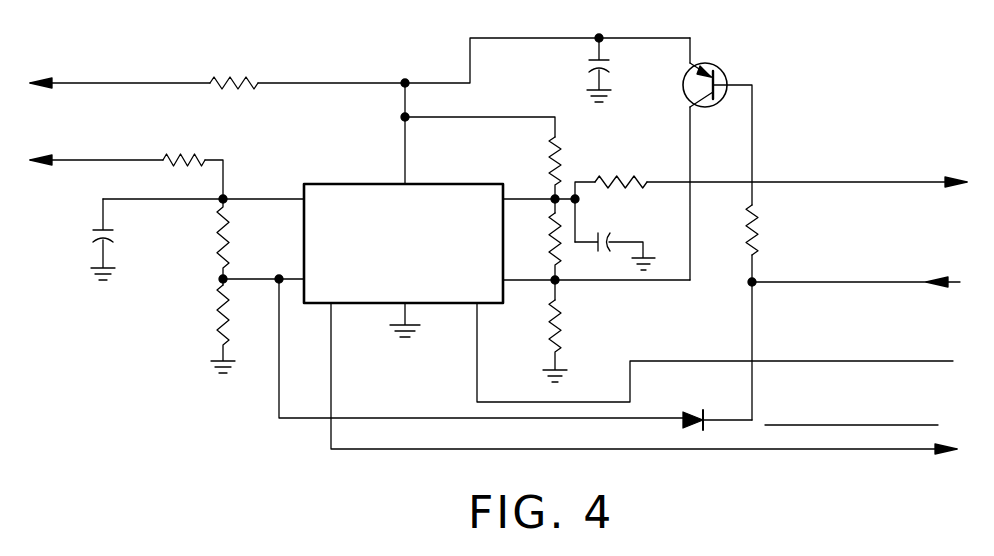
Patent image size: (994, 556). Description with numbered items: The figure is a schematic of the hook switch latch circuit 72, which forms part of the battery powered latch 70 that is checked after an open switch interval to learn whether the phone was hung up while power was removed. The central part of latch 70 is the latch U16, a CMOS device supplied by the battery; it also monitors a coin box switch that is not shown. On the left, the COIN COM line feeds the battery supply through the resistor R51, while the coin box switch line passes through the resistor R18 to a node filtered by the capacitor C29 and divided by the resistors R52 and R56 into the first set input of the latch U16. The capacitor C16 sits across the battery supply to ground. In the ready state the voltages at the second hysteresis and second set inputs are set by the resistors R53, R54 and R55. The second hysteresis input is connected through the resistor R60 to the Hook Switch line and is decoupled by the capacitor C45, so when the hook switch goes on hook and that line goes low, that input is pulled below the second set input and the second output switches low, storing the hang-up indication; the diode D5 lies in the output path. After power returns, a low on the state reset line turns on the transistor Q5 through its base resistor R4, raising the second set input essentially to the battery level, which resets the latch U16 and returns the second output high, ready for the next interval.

The battery powered latch 70 is at (498, 229).
The hook switch latch circuit 72 is at (497, 30).
The resistor R51 is at (234, 83).
The resistor R18 is at (184, 160).
The capacitor C29 is at (127, 239).
The resistor R52 is at (240, 242).
The resistor R56 is at (241, 329).
The latch U16 is at (403, 243).
The resistor R53 is at (538, 175).
The resistor R54 is at (537, 256).
The resistor R55 is at (533, 341).
The resistor R60 is at (621, 183).
The capacitor C45 is at (615, 246).
The capacitor C16 is at (620, 70).
The transistor Q5 is at (661, 95).
The base resistor R4 is at (774, 232).
The diode D5 is at (668, 416).